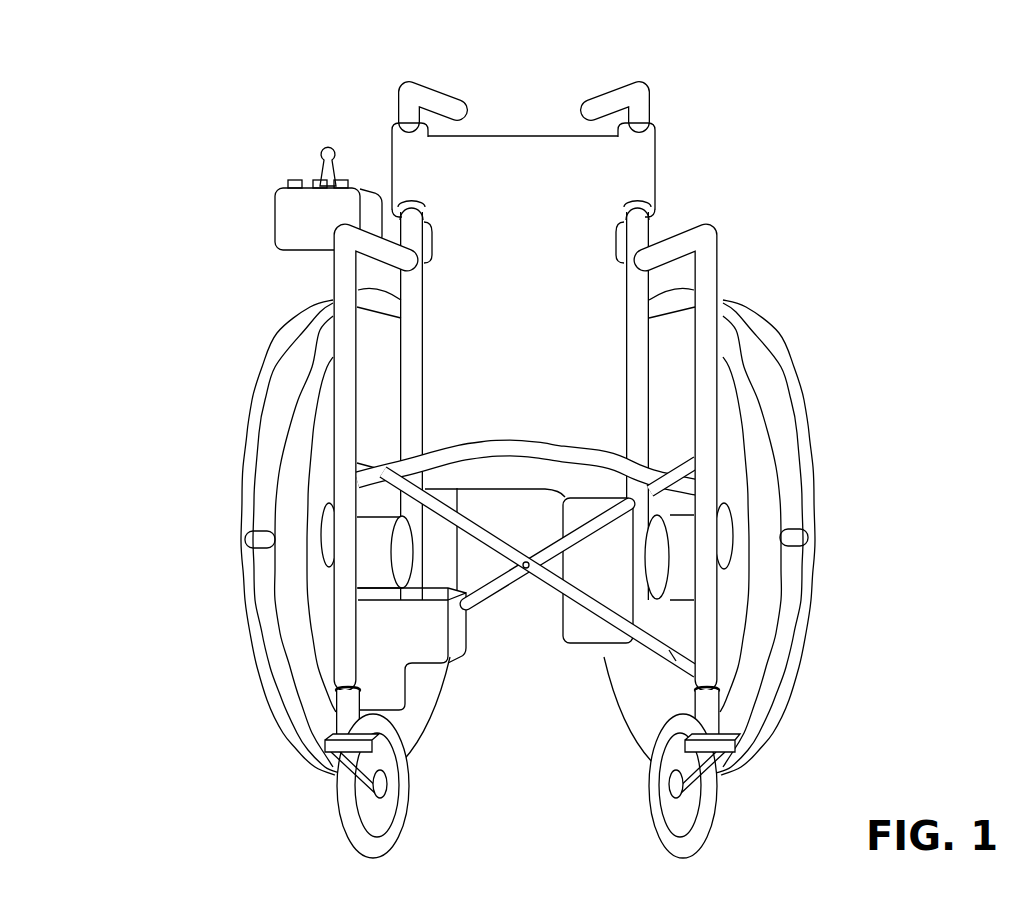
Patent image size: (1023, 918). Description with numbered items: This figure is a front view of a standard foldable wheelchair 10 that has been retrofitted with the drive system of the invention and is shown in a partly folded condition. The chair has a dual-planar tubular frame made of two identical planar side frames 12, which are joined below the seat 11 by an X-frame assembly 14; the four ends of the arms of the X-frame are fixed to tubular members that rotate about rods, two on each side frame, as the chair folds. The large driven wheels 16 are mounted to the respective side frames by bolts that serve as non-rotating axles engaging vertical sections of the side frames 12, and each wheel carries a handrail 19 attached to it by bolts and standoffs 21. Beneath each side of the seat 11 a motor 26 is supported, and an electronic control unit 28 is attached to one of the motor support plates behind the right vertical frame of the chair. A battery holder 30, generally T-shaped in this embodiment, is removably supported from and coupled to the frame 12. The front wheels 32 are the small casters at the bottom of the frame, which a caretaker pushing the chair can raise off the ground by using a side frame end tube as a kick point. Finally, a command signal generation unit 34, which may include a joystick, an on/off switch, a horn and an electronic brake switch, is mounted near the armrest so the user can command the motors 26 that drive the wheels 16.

The foldable wheelchair 10 is at (538, 96).
The seat 11 is at (533, 441).
The tubular side frames 12 is at (706, 243).
The X-frame assembly 14 is at (538, 574).
The driven wheels 16 is at (283, 471).
The handrails 19 is at (262, 597).
The standoffs 21 is at (250, 542).
The motor 26 is at (366, 572).
The electronic control unit 28 is at (578, 648).
The battery holder 30 is at (455, 663).
The front wheels 32 is at (720, 803).
The command signal generation unit 34 is at (266, 252).